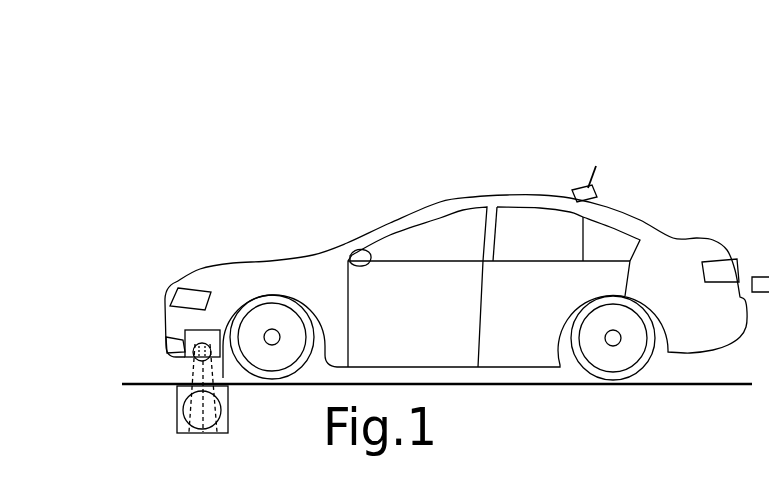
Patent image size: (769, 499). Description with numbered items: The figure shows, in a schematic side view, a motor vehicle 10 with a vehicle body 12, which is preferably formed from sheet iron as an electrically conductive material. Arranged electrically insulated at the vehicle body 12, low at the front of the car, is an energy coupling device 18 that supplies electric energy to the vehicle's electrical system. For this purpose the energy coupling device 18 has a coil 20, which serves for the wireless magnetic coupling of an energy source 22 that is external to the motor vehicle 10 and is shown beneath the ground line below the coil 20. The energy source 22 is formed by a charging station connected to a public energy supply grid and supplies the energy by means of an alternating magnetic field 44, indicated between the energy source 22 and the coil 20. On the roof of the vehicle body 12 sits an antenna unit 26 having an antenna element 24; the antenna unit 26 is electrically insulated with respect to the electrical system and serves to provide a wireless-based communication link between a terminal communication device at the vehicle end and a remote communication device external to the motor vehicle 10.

The motor vehicle 10 is at (480, 152).
The vehicle body 12 is at (275, 260).
The energy coupling device 18 is at (136, 358).
The coil 20 is at (197, 356).
The energy source 22 is at (197, 424).
The antenna element 24 is at (596, 180).
The antenna unit 26 is at (576, 171).
The alternating magnetic field 44 is at (238, 405).